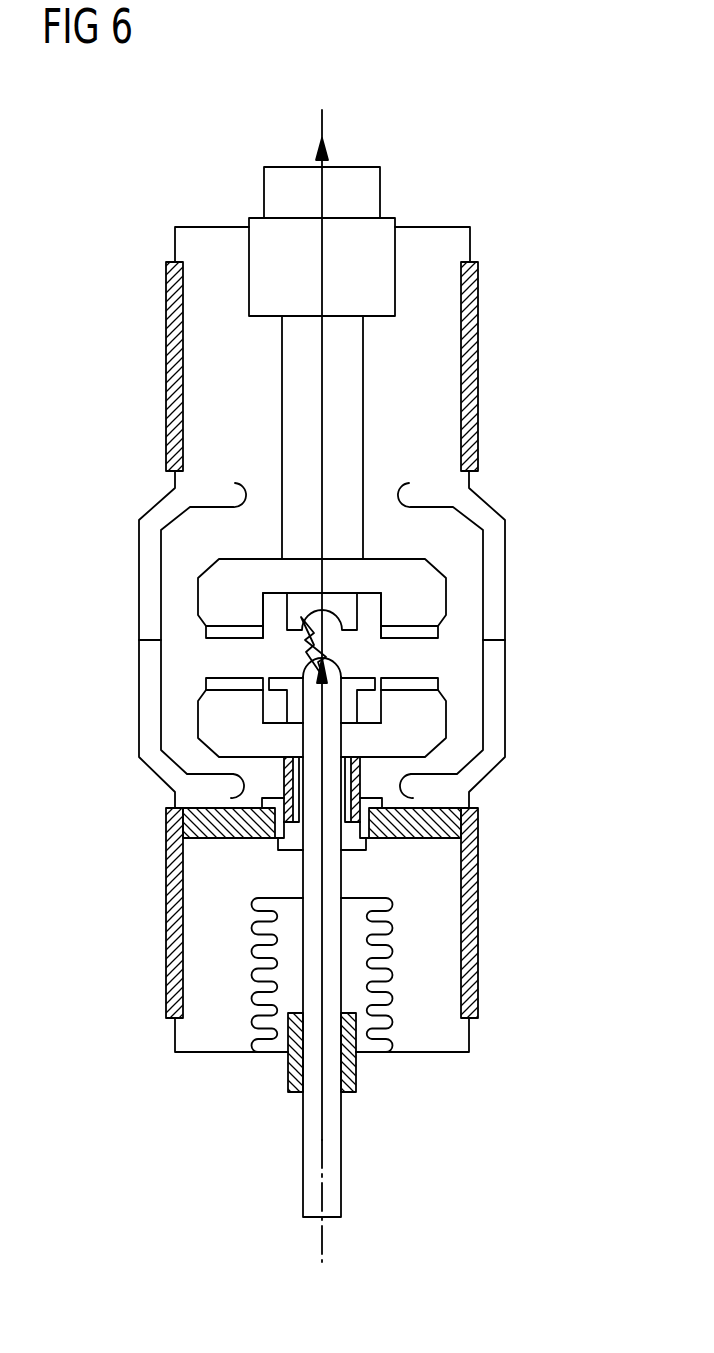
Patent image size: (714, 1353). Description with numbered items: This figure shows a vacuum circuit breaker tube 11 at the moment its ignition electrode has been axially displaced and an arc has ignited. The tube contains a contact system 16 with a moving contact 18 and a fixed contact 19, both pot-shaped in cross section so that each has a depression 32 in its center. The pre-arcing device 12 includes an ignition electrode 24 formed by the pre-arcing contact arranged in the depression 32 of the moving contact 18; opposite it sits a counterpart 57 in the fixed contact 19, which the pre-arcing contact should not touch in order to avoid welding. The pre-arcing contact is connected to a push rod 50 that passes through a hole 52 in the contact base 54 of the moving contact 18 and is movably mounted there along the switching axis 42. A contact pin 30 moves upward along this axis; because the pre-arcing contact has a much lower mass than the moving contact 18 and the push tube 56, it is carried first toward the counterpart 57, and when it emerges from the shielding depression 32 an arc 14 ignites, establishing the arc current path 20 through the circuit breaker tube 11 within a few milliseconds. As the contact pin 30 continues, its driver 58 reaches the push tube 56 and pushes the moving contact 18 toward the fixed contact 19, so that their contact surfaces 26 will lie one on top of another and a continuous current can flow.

The circuit breaker tube 11 is at (442, 160).
The pre-arcing device 12 is at (462, 662).
The arc 14 is at (300, 647).
The contact system 16 is at (447, 592).
The moving contact 18 is at (210, 720).
The fixed contact 19 is at (212, 599).
The arc current path 20 is at (322, 522).
The ignition electrode 24 is at (337, 663).
The contact surfaces 26 is at (212, 634).
The contact pin 30 is at (341, 1166).
The depression 32 is at (259, 702).
The switching axis 42 is at (320, 125).
The push rod 50 is at (343, 877).
The hole 52 is at (350, 737).
The contact base 54 is at (287, 692).
The push tube 56 is at (362, 772).
The counterpart 57 is at (302, 605).
The driver 58 is at (363, 850).